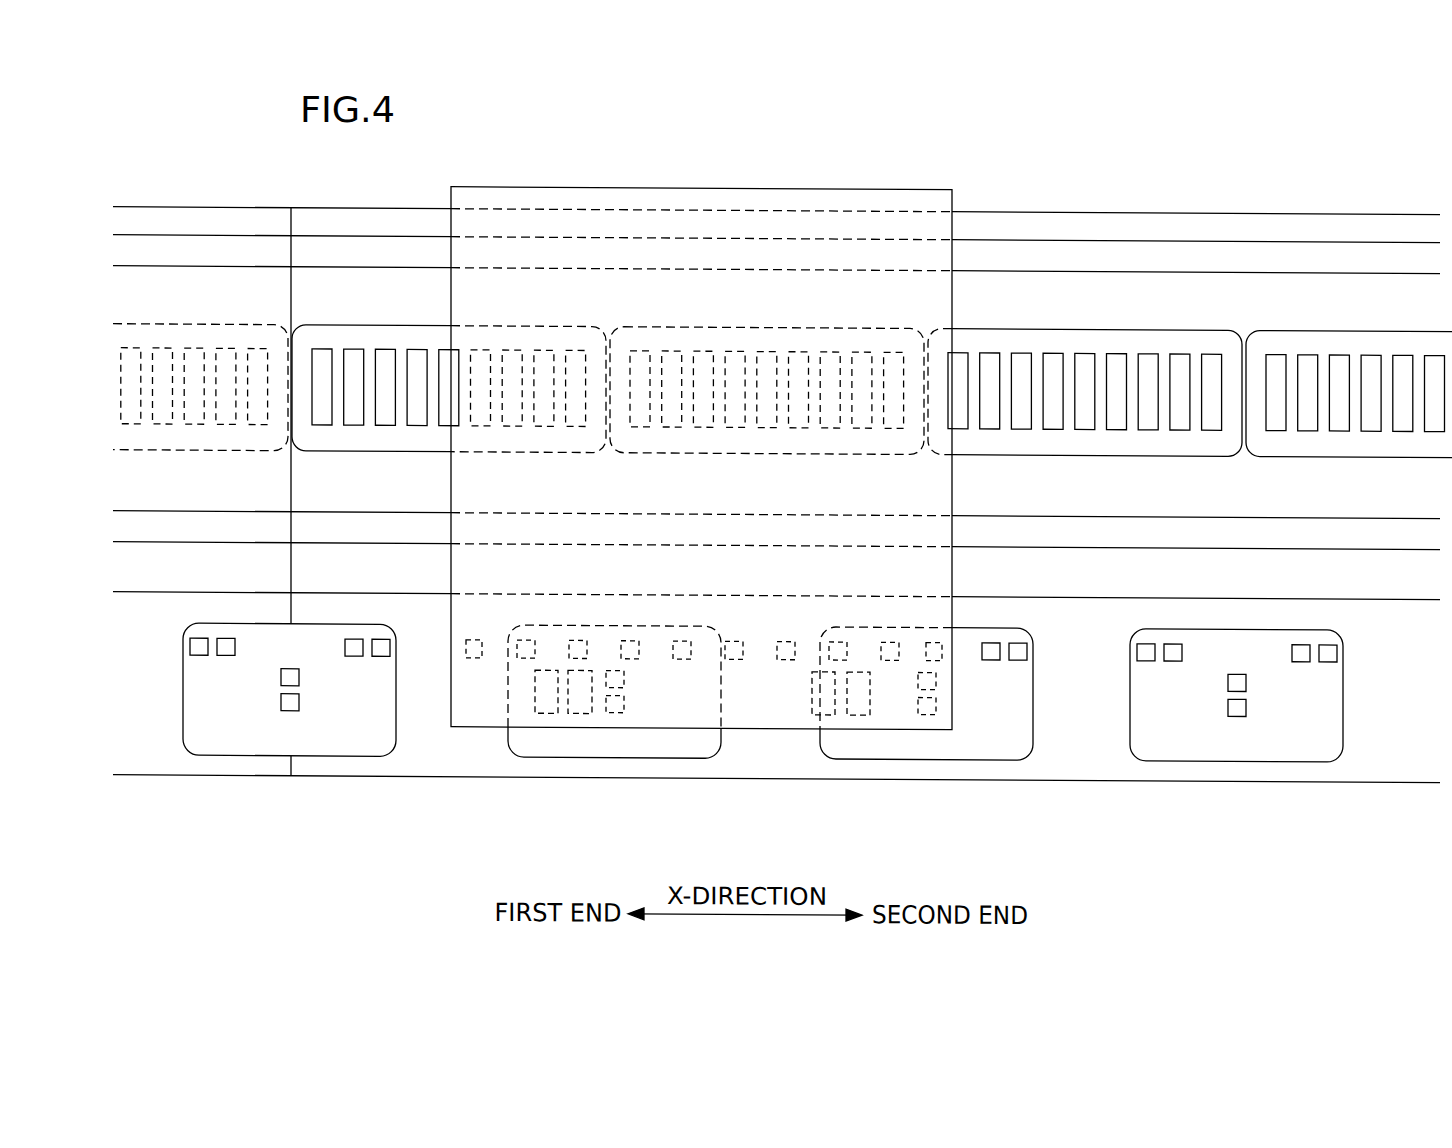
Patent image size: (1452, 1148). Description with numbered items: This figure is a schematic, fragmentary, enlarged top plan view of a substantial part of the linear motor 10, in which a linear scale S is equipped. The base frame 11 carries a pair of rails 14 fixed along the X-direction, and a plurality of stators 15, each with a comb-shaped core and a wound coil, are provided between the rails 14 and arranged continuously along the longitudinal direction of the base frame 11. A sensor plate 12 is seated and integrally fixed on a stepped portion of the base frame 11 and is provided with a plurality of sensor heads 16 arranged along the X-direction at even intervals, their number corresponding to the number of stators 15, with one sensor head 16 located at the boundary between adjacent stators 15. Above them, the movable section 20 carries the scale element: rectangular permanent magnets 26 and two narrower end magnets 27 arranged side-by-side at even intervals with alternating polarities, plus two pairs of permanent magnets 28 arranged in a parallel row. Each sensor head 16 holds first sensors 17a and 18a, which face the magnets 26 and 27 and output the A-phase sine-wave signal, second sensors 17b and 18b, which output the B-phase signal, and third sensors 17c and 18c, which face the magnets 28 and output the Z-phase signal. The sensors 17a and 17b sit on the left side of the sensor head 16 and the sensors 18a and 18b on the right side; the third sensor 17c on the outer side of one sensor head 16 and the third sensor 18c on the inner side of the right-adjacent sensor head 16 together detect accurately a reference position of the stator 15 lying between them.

The linear motor 10 is at (1225, 192).
The base frame 11 is at (310, 305).
The sensor plate 12 is at (300, 613).
The rails 14 is at (1065, 252).
The stators 15 is at (130, 322).
The sensor heads 16 is at (312, 636).
The first sensor 17a is at (197, 657).
The second sensor 17b is at (224, 657).
The third sensor 17c is at (283, 708).
The first sensor 18a is at (353, 657).
The second sensor 18b is at (382, 657).
The third sensor 18c is at (299, 680).
The movable section 20 is at (757, 188).
The permanent magnets 26 is at (520, 640).
The permanent magnets 27 is at (470, 642).
The permanent magnets 28 is at (578, 713).
The linear scale S is at (413, 836).